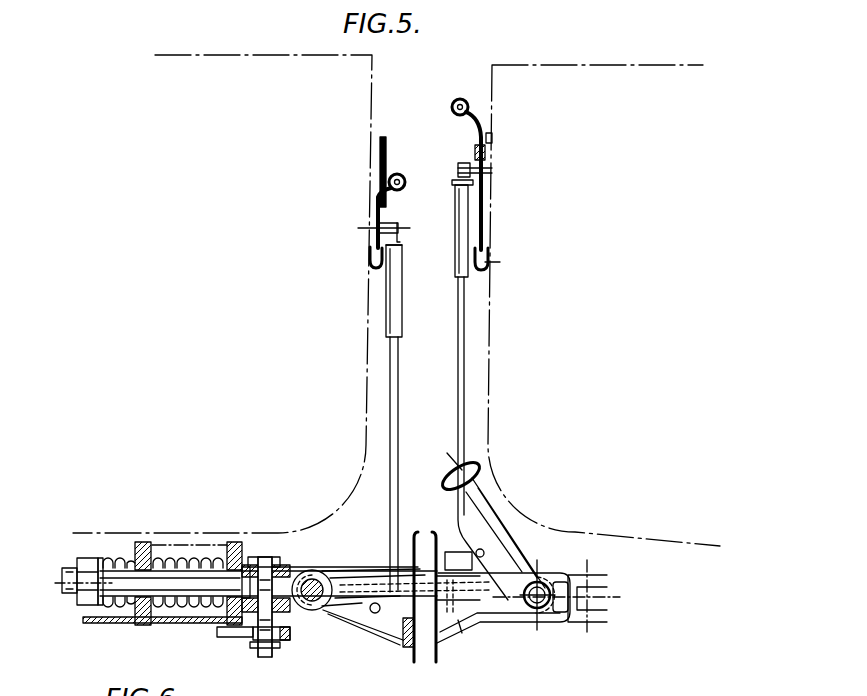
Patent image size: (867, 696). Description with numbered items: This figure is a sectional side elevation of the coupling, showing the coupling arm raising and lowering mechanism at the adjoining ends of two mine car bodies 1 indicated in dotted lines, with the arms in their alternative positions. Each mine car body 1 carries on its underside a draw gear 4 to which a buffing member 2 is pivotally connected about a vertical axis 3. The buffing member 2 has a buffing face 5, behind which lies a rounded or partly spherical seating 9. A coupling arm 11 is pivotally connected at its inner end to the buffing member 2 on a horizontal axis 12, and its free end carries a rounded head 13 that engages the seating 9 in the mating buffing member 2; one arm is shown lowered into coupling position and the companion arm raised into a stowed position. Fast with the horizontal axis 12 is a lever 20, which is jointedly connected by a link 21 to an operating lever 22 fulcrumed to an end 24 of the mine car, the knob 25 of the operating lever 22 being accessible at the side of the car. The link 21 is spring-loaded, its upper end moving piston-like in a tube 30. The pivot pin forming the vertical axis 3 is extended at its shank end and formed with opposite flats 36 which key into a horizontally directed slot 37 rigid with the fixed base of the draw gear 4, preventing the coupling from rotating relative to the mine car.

The mine car body 1 is at (230, 56).
The buffing member 2 is at (597, 617).
The vertical axis 3 is at (268, 565).
The draw gear 4 is at (178, 588).
The buffing face 5 is at (422, 548).
The seating 9 is at (402, 632).
The coupling arm 11 is at (362, 587).
The horizontal axis 12 is at (313, 617).
The head 13 is at (473, 463).
The lever 20 is at (373, 614).
The link 21 is at (390, 352).
The operating lever 22 is at (382, 219).
The end of the mine car 24 is at (489, 138).
The knob 25 is at (386, 183).
The tube 30 is at (368, 256).
The flats 36 is at (256, 640).
The slot 37 is at (110, 621).